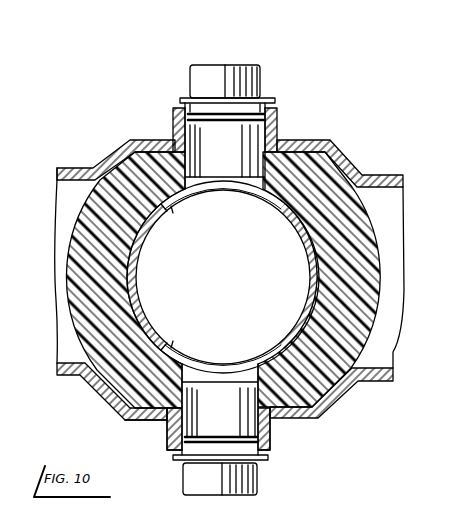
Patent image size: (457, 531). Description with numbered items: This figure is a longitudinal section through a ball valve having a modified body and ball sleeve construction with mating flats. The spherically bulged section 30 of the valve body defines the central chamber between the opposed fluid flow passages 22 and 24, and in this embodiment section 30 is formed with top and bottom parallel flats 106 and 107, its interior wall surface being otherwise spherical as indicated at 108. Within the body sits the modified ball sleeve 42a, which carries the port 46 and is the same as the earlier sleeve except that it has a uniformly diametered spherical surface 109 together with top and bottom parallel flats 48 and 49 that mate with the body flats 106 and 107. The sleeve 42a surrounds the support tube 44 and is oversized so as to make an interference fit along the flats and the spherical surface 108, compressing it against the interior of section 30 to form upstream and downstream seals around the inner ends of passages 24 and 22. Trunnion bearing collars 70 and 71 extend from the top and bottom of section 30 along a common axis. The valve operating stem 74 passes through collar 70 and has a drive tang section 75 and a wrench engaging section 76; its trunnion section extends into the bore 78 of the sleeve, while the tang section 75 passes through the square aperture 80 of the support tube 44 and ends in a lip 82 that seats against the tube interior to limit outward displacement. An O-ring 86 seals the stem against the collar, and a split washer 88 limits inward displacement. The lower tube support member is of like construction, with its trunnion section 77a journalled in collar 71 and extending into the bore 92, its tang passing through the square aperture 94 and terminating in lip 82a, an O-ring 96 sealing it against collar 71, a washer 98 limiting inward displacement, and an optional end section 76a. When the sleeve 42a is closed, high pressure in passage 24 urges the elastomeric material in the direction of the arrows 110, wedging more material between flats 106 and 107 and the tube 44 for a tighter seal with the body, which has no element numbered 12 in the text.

The valve housing 12 is at (28, 261).
The fluid flow passage 22 is at (388, 369).
The fluid flow passage 24 is at (60, 363).
The spherically bulged section 30 is at (121, 412).
The modified ball sleeve 42a is at (118, 283).
The support tube 44 is at (307, 239).
The port 46 is at (312, 279).
The top flat 48 is at (310, 148).
The bottom flat 49 is at (302, 413).
The trunnion bearing collar 70 is at (281, 118).
The trunnion bearing collar 71 is at (170, 450).
The valve operating stem 74 is at (256, 68).
The drive tang section 75 is at (208, 183).
The wrench engaging section 76 is at (210, 76).
The wrench-engaging end section 76a is at (197, 483).
The trunnion section 77a is at (167, 432).
The bore 78 is at (194, 117).
The square aperture 80 is at (197, 200).
The lip 82 is at (236, 196).
The lip 82a is at (228, 360).
The O-ring 86 is at (182, 102).
The split washer 88 is at (269, 101).
The bore 92 is at (252, 400).
The square aperture 94 is at (188, 353).
The O-ring 96 is at (270, 456).
The washer 98 is at (173, 458).
The top flat 106 is at (290, 143).
The bottom flat 107 is at (284, 412).
The spherical interior wall surface 108 is at (104, 391).
The spherical surface 109 is at (373, 222).
The arrows 110 is at (72, 317).